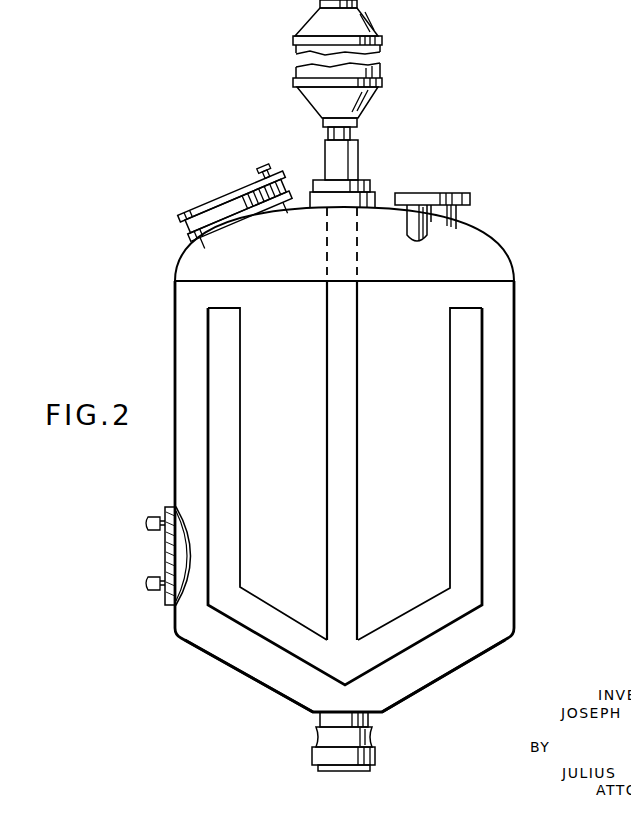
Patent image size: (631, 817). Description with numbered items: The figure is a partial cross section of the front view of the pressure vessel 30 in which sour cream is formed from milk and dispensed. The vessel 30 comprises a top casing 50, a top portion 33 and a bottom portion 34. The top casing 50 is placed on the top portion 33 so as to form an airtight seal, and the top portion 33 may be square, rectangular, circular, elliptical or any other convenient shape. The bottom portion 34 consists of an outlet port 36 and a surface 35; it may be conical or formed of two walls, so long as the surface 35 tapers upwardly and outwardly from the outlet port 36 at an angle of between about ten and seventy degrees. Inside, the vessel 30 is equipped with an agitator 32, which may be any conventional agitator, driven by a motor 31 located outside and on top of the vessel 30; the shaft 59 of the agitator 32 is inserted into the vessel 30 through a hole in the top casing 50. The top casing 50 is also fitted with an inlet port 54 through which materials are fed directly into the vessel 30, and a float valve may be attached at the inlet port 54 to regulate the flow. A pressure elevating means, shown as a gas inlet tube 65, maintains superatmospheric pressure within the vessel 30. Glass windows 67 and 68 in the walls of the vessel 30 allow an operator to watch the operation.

The vessel 30 is at (190, 347).
The motor 31 is at (360, 105).
The agitator 32 is at (465, 510).
The top portion 33 is at (500, 553).
The bottom portion 34 is at (476, 660).
The surface 35 is at (245, 674).
The outlet port 36 is at (368, 718).
The top casing 50 is at (483, 267).
The inlet port 54 is at (412, 197).
The shaft 59 is at (345, 412).
The gas inlet tube 65 is at (447, 194).
The glass window 67 is at (220, 206).
The glass window 68 is at (165, 545).